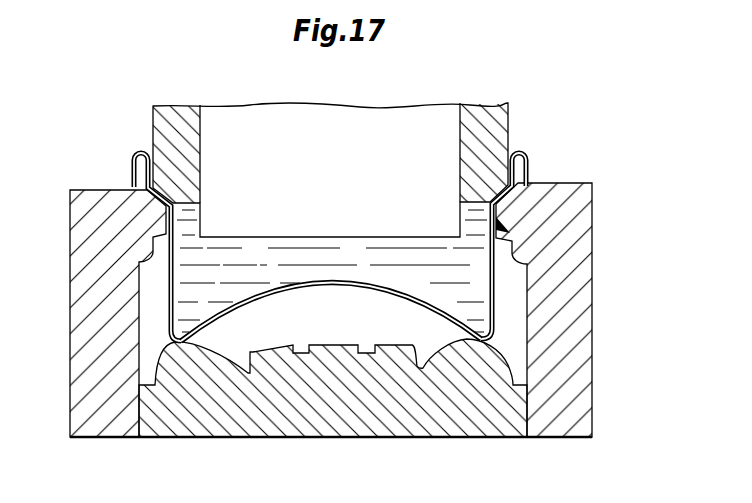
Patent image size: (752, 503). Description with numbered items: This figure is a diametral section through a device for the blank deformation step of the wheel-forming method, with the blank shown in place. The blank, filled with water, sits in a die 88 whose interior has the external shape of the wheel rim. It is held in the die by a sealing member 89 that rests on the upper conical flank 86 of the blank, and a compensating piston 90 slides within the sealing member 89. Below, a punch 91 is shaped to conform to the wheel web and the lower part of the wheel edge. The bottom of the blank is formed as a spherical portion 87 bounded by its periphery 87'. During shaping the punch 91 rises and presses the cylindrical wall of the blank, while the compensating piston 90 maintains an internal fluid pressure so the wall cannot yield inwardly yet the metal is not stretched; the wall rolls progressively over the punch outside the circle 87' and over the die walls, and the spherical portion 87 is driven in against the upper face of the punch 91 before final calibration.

The upper conical flank 86 is at (160, 198).
The spherical portion 87 is at (331, 311).
The periphery of the spherical portion 87' is at (162, 399).
The die 88 is at (575, 240).
The sealing member 89 is at (168, 146).
The compensating piston 90 is at (440, 130).
The punch 91 is at (467, 420).